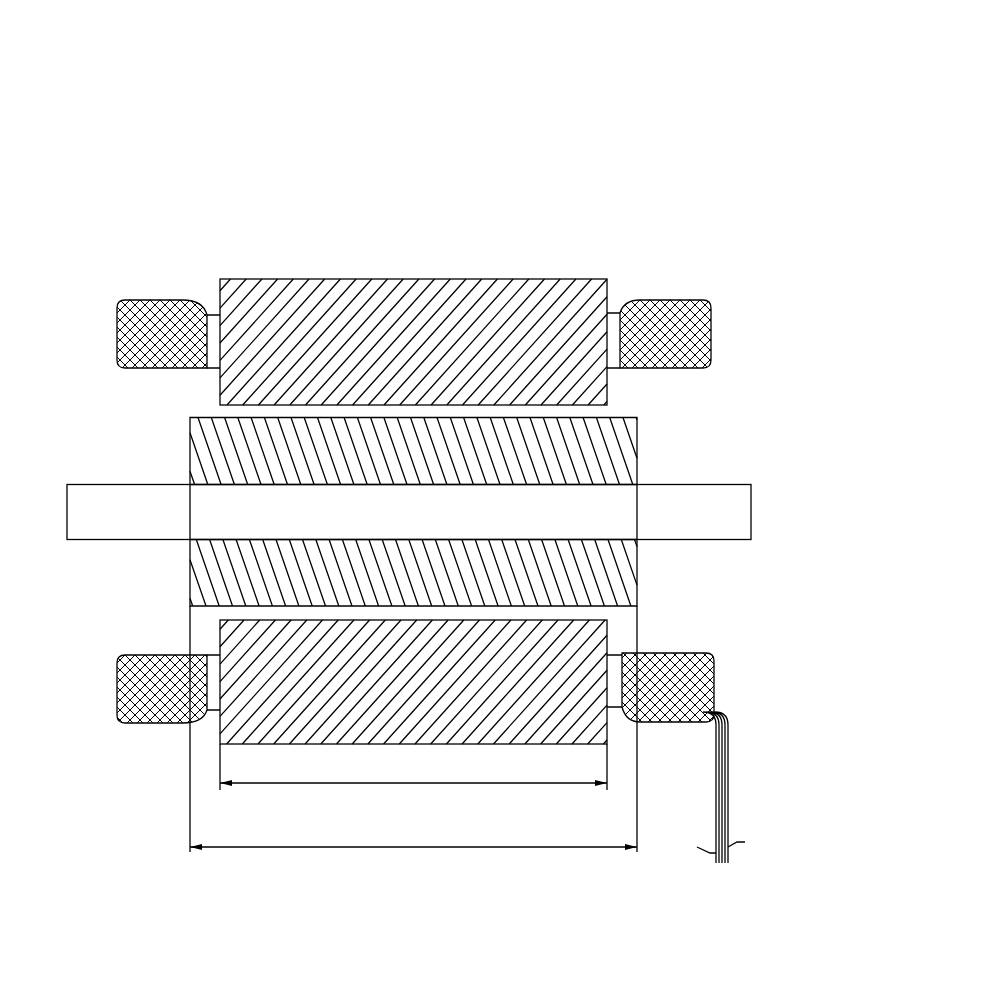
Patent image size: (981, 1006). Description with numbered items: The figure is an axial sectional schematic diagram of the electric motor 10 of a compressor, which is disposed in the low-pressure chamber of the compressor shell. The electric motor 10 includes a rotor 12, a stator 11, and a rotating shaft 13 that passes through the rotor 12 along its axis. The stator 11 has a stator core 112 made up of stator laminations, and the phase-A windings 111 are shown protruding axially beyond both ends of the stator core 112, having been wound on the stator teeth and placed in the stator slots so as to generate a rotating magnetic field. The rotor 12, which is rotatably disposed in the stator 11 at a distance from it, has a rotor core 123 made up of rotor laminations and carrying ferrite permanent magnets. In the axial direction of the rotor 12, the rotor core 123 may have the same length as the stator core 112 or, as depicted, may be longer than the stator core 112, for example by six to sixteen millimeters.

The electric motor 10 is at (677, 130).
The stator 11 is at (315, 278).
The phase-A windings 111 is at (690, 328).
The stator core 112 is at (440, 298).
The rotor 12 is at (188, 575).
The rotor core 123 is at (228, 447).
The rotating shaft 13 is at (712, 500).